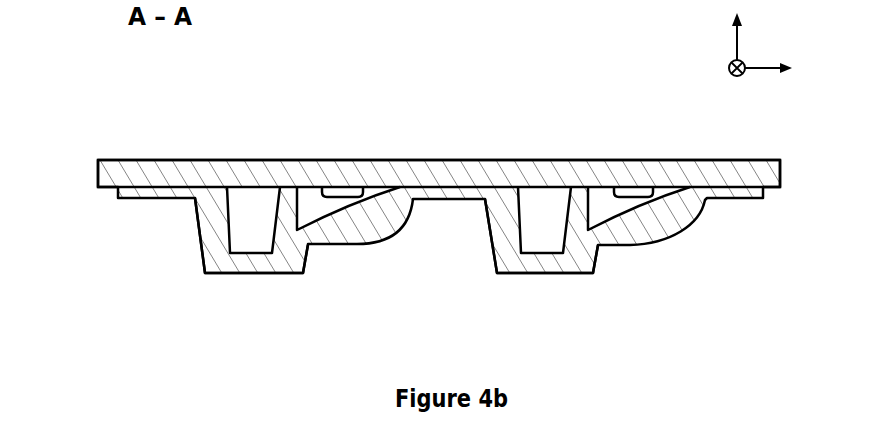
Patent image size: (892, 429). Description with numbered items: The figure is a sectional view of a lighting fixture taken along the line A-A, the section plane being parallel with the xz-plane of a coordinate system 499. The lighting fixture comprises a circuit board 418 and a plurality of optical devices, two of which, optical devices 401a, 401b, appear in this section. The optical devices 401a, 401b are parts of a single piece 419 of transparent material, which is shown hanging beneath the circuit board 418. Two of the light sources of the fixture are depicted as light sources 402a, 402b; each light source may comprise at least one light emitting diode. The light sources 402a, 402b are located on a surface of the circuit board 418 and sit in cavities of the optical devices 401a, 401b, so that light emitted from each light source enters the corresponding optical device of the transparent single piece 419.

The circuit board 418 is at (415, 160).
The single piece of transparent material 419 is at (117, 192).
The optical device 401a is at (285, 275).
The optical device 401b is at (560, 275).
The light source 402a is at (332, 189).
The light source 402b is at (635, 189).
The coordinate system 499 is at (788, 45).